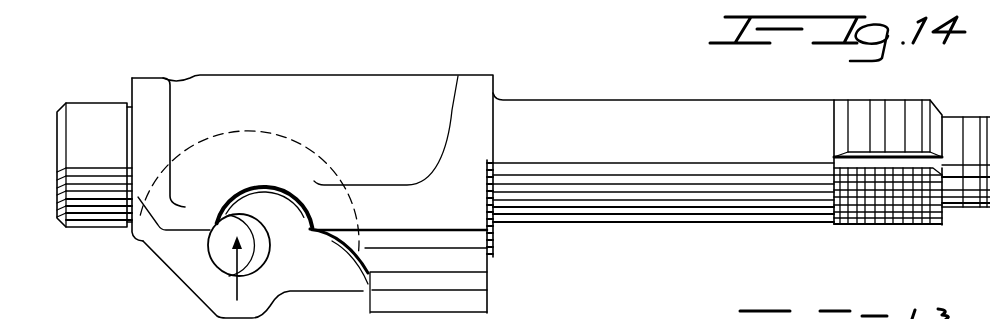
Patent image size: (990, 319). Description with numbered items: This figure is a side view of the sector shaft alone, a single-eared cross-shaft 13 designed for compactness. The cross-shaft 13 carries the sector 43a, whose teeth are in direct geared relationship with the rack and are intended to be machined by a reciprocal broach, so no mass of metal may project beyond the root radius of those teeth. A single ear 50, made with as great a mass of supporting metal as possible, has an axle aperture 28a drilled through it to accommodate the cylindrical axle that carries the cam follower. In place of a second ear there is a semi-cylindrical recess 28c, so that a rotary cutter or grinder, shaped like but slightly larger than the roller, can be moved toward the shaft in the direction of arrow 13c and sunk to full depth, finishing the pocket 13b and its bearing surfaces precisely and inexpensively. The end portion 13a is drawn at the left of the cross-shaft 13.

The cross-shaft 13 is at (655, 141).
The threaded end cap 13a is at (102, 228).
The pocket 13b is at (265, 131).
The arrow 13c is at (237, 289).
The axle aperture 28a is at (256, 260).
The semi-cylindrical recess 28c is at (282, 188).
The sector 43a is at (488, 298).
The single ear 50 is at (183, 282).